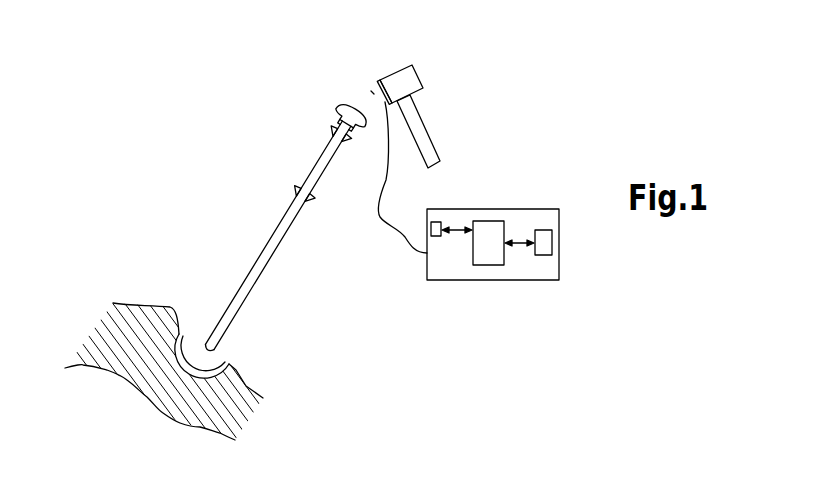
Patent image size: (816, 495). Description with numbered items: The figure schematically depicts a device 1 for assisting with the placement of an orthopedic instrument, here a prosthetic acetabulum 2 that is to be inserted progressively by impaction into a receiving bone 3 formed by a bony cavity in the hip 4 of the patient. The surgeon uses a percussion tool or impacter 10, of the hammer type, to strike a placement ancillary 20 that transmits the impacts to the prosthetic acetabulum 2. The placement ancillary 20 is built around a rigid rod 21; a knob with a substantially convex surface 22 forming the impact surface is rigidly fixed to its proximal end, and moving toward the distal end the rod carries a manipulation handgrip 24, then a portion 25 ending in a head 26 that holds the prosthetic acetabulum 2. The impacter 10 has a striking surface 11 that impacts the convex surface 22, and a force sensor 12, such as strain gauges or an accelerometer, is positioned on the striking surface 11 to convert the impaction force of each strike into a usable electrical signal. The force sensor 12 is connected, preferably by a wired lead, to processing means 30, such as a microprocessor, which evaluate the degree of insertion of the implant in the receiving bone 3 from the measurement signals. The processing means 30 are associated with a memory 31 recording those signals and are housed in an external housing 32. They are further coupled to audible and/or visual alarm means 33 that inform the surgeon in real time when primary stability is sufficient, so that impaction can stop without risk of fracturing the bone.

The device 1 is at (230, 153).
The prosthetic acetabulum 2 is at (228, 350).
The receiving bone 3 is at (168, 347).
The hip 4 is at (155, 305).
The impacter 10 is at (440, 131).
The striking surface 11 is at (378, 81).
The force sensor 12 is at (372, 92).
The placement ancillary 20 is at (275, 223).
The rigid rod 21 is at (341, 116).
The convex surface 22 is at (348, 100).
The manipulation handgrip 24 is at (321, 155).
The portion 25 is at (273, 254).
The head 26 is at (199, 338).
The processing means 30 is at (496, 266).
The memory 31 is at (430, 209).
The external housing 32 is at (531, 209).
The alarm means 33 is at (553, 243).